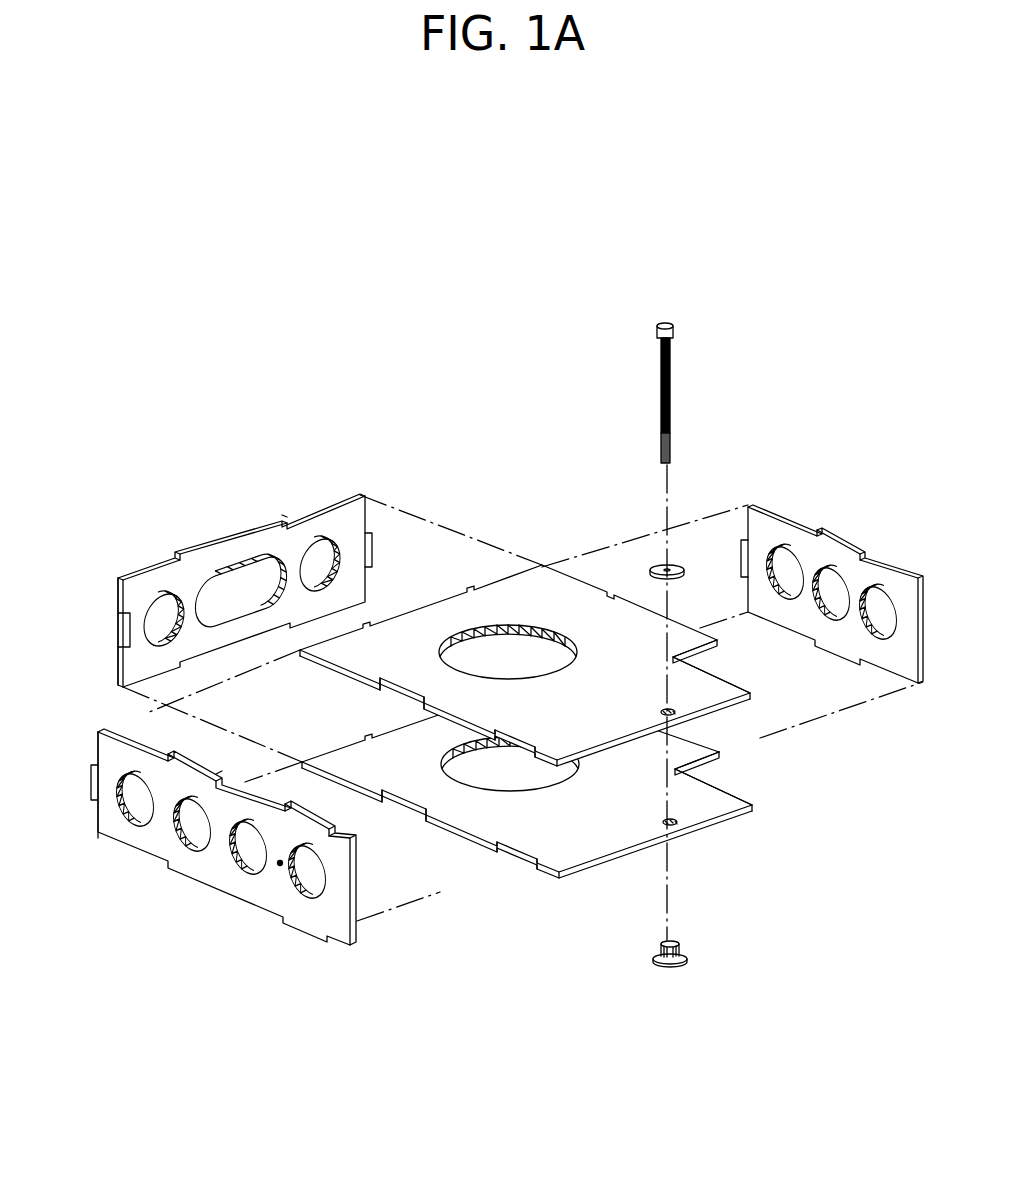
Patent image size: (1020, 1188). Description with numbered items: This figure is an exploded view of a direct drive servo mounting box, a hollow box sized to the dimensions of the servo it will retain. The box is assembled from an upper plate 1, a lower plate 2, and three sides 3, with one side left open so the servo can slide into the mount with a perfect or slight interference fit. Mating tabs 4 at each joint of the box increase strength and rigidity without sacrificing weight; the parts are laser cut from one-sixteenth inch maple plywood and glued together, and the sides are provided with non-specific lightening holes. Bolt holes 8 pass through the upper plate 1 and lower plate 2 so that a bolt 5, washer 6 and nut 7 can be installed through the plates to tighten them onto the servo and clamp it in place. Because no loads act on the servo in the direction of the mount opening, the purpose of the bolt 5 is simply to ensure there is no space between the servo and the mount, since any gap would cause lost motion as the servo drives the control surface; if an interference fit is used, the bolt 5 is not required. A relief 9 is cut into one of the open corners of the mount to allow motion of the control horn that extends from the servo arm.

The upper plate 1 is at (538, 595).
The lower plate 2 is at (577, 828).
The sides 3 is at (268, 540).
The mating tabs 4 is at (93, 773).
The bolt 5 is at (670, 390).
The washer 6 is at (681, 562).
The nut 7 is at (690, 957).
The bolt holes 8 is at (668, 712).
The relief 9 is at (730, 663).